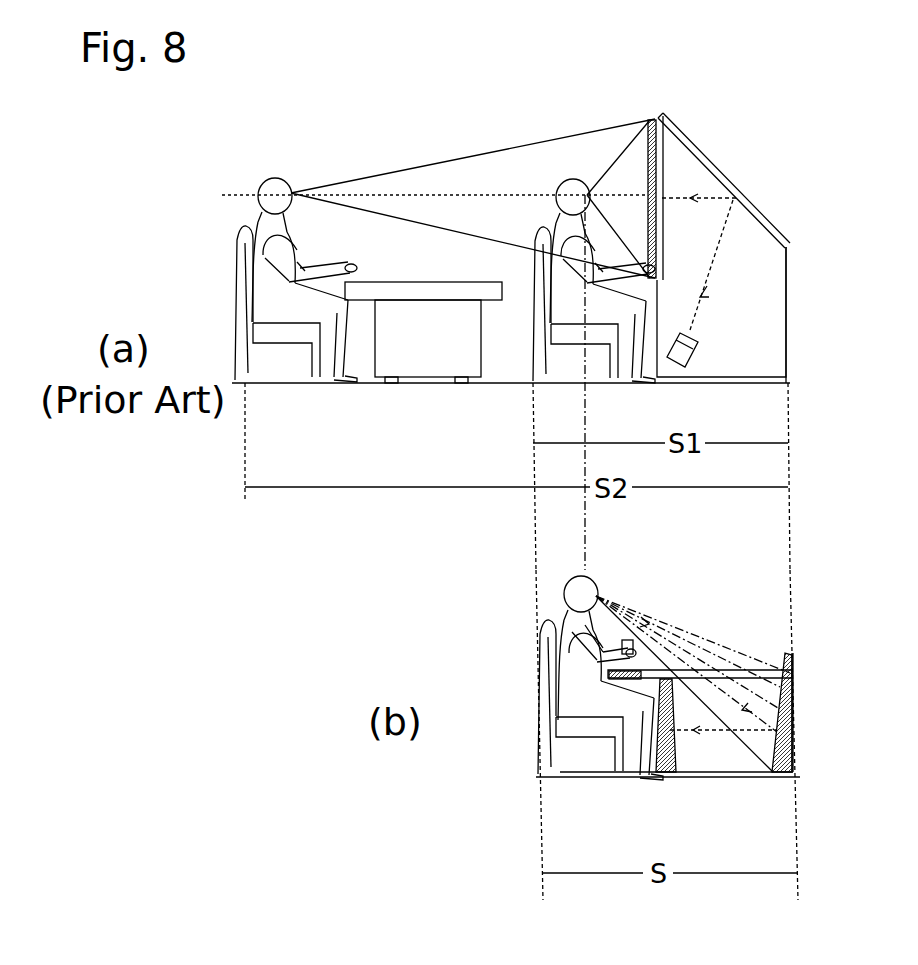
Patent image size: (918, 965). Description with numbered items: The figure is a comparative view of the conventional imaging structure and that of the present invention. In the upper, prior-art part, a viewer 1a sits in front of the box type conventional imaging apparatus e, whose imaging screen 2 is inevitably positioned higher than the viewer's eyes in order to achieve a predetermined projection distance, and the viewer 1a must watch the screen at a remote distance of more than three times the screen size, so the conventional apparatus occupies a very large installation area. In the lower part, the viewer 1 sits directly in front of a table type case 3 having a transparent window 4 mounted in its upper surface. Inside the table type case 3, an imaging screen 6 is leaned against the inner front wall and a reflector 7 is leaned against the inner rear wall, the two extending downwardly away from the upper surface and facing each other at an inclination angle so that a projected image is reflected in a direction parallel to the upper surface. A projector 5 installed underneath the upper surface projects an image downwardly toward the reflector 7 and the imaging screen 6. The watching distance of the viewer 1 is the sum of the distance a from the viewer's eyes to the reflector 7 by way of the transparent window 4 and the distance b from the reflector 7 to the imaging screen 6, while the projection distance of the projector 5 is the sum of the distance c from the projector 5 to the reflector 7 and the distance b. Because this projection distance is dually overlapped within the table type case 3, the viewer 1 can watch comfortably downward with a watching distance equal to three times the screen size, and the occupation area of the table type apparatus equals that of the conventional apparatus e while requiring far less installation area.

In FIG. 8A, the viewer 1a is at (273, 243).
In FIG. 8A, the imaging screen 2 is at (686, 124).
In FIG. 8A, the table type case 3 is at (412, 355).
In FIG. 8B, the table type case 3 is at (797, 742).
In FIG. 8A, the box type conventional imaging apparatus e is at (788, 338).
In FIG. 8B, the viewer 1 is at (555, 702).
In FIG. 8B, the transparent window 4 is at (712, 668).
In FIG. 8B, the projector 5 is at (660, 655).
In FIG. 8B, the imaging screen 6 is at (660, 780).
In FIG. 8B, the reflector 7 is at (770, 780).
In FIG. 8B, the distance from the viewer's eyes to the reflector a is at (693, 650).
In FIG. 8B, the distance from the reflector to the imaging screen b is at (686, 671).
In FIG. 8B, the distance from the projector to the reflector c is at (687, 659).